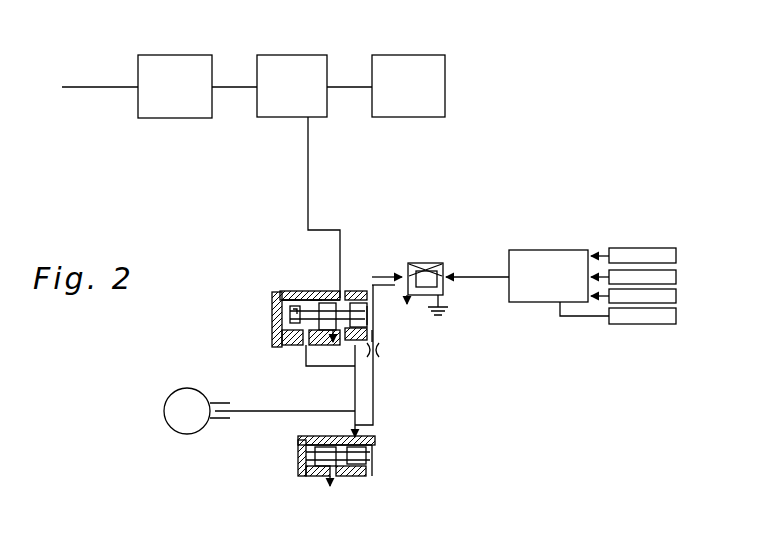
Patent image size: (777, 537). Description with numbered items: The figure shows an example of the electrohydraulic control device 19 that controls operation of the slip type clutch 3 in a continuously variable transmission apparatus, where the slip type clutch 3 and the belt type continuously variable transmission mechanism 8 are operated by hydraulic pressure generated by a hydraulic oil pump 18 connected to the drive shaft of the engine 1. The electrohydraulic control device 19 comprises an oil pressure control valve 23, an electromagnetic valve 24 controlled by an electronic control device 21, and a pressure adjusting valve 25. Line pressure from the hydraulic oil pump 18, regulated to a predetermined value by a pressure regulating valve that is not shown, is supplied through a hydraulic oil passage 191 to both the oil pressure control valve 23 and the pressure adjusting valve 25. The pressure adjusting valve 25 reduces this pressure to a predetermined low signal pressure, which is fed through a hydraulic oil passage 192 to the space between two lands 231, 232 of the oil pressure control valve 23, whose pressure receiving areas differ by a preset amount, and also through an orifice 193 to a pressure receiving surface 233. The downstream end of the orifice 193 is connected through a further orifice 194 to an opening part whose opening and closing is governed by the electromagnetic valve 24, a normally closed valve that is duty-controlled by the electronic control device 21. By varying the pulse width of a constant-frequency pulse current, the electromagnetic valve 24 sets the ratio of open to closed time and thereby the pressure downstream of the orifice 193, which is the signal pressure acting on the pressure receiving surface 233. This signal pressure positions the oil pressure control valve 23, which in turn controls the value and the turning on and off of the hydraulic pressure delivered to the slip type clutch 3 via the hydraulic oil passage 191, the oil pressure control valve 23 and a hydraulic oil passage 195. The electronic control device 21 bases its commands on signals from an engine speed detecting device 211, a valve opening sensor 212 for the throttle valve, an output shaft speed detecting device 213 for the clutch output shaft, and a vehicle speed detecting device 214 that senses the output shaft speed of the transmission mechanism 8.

The engine 1 is at (437, 55).
The slip type clutch 3 is at (313, 55).
The belt type continuously variable transmission mechanism 8 is at (198, 55).
The hydraulic oil pump 18 is at (178, 430).
The electrohydraulic control device 19 is at (461, 401).
The hydraulic oil passage 191 is at (260, 411).
The hydraulic oil passage 192 is at (375, 388).
The orifice 193 is at (380, 352).
The orifice 194 is at (373, 272).
The hydraulic oil passage 195 is at (308, 190).
The electronic control device 21 is at (570, 250).
The engine speed detecting device 211 is at (668, 248).
The valve opening sensor 212 is at (676, 277).
The output shaft speed detecting device 213 is at (678, 297).
The vehicle speed detecting device 214 is at (676, 316).
The oil pressure control valve 23 is at (260, 322).
The land 231 is at (299, 297).
The land 232 is at (315, 290).
The pressure receiving surface 233 is at (382, 312).
The electromagnetic valve 24 is at (441, 263).
The pressure adjusting valve 25 is at (377, 447).